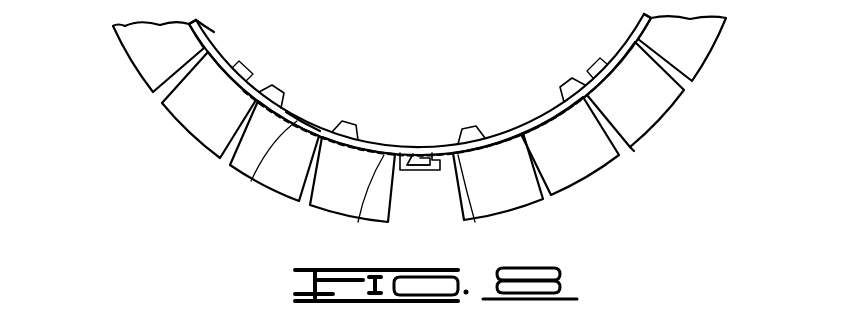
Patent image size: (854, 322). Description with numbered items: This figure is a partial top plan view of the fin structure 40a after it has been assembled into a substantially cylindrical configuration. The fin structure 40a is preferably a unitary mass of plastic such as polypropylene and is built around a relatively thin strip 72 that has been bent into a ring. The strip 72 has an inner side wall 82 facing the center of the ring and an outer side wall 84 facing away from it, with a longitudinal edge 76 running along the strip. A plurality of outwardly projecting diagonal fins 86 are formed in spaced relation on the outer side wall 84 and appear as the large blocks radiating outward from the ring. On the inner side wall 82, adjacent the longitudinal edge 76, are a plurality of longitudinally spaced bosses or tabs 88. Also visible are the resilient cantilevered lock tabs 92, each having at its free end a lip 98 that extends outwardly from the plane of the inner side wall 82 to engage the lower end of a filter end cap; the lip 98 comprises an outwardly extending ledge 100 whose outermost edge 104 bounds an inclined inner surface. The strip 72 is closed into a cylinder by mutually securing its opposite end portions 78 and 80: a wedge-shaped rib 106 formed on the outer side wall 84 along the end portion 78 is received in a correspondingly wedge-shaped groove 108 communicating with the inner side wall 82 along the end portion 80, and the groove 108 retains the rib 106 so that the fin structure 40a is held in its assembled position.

The fin structure 40a is at (540, 127).
The strip 72 is at (251, 181).
The second longitudinal edge 76 is at (540, 117).
The first end portion 78 is at (478, 216).
The second end portion 80 is at (358, 222).
The inner side wall 82 is at (303, 113).
The outer side wall 84 is at (650, 131).
The diagonal fins 86 is at (193, 117).
The bosses or tabs 88 is at (277, 88).
The resilient cantilevered lock tab 92 is at (205, 25).
The lip 98 is at (240, 62).
The ledge 100 is at (230, 50).
The outermost edge 104 is at (214, 32).
The rib 106 is at (423, 170).
The groove 108 is at (422, 152).